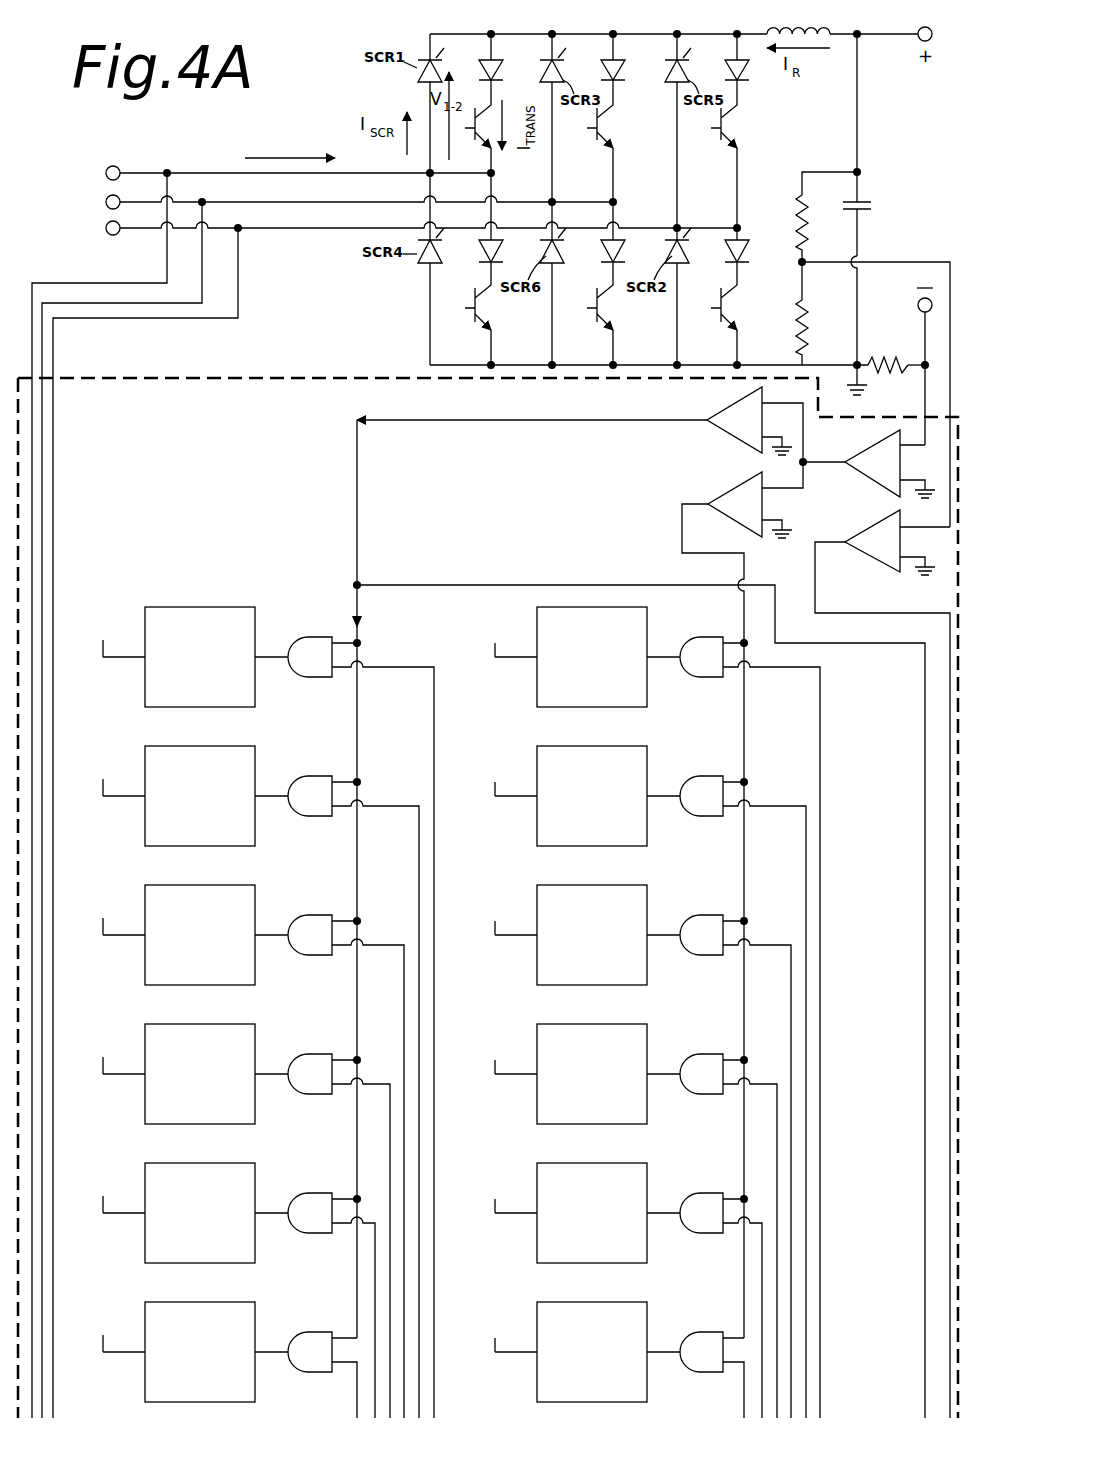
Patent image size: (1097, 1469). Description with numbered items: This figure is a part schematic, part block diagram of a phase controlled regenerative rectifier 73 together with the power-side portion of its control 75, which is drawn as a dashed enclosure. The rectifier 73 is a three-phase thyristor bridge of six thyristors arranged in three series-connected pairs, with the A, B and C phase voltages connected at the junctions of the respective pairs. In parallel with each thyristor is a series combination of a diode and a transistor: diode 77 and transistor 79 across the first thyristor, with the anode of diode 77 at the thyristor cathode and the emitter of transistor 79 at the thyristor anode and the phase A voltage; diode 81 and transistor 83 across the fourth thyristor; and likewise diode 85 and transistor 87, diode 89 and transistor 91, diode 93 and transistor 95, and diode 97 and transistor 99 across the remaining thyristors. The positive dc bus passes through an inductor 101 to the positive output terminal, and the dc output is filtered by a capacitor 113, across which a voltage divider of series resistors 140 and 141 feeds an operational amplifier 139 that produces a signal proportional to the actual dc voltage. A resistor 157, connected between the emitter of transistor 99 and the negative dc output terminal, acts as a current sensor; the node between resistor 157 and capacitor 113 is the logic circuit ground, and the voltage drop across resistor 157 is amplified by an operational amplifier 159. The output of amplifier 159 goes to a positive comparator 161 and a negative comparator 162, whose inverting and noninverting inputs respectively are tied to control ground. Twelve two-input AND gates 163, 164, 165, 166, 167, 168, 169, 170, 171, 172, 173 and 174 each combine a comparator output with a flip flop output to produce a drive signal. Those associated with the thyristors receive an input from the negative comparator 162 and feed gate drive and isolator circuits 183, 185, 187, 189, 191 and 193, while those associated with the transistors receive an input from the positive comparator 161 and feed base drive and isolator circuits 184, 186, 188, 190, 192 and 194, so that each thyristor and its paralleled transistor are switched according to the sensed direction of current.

The phase controlled regenerative rectifier 73 is at (214, 131).
The control 75 is at (302, 383).
The diode 77 is at (500, 68).
The transistor 79 is at (465, 128).
The diode 81 is at (479, 252).
The transistor 83 is at (465, 308).
The diode 85 is at (622, 68).
The transistor 87 is at (587, 128).
The diode 89 is at (601, 252).
The transistor 91 is at (587, 308).
The diode 93 is at (748, 68).
The transistor 95 is at (711, 128).
The diode 97 is at (725, 252).
The transistor 99 is at (711, 308).
The inductor 101 is at (832, 28).
The capacitor 113 is at (868, 204).
The operational amplifier 139 is at (872, 536).
The resistor 140 is at (798, 214).
The resistor 141 is at (798, 330).
The resistor 157 is at (886, 360).
The operational amplifier 159 is at (870, 454).
The positive comparator 161 is at (732, 492).
The negative comparator 162 is at (732, 438).
The two-input AND gate 163 is at (300, 646).
The two-input AND gate 164 is at (300, 1341).
The two-input AND gate 165 is at (300, 924).
The two-input AND gate 166 is at (300, 785).
The two-input AND gate 167 is at (300, 1202).
The two-input AND gate 168 is at (300, 1063).
The two-input AND gate 169 is at (692, 646).
The two-input AND gate 170 is at (692, 1341).
The two-input AND gate 171 is at (692, 924).
The two-input AND gate 172 is at (692, 785).
The two-input AND gate 173 is at (692, 1202).
The two-input AND gate 174 is at (692, 1063).
The gate drive circuit and isolator 183 is at (170, 613).
The base drive circuit and isolator 184 is at (645, 630).
The gate drive circuit and isolator 185 is at (170, 752).
The base drive circuit and isolator 186 is at (565, 752).
The gate drive circuit and isolator 187 is at (170, 891).
The base drive circuit and isolator 188 is at (565, 891).
The gate drive circuit and isolator 189 is at (170, 1030).
The base drive circuit and isolator 190 is at (565, 1030).
The gate drive circuit and isolator 191 is at (170, 1169).
The base drive circuit and isolator 192 is at (565, 1169).
The gate drive circuit and isolator 193 is at (170, 1308).
The base drive circuit and isolator 194 is at (565, 1308).